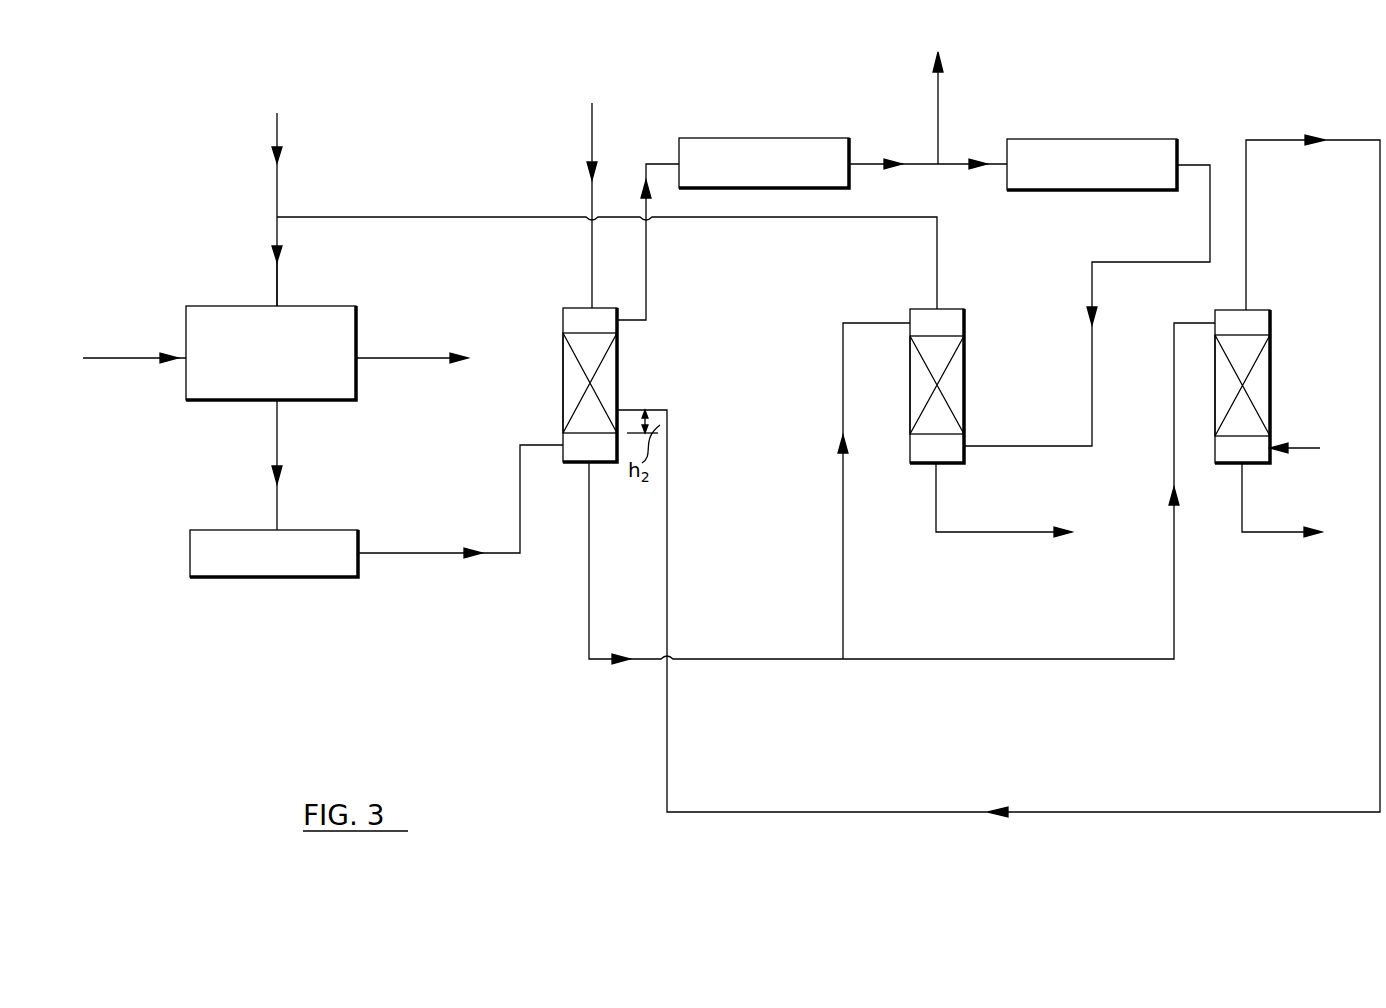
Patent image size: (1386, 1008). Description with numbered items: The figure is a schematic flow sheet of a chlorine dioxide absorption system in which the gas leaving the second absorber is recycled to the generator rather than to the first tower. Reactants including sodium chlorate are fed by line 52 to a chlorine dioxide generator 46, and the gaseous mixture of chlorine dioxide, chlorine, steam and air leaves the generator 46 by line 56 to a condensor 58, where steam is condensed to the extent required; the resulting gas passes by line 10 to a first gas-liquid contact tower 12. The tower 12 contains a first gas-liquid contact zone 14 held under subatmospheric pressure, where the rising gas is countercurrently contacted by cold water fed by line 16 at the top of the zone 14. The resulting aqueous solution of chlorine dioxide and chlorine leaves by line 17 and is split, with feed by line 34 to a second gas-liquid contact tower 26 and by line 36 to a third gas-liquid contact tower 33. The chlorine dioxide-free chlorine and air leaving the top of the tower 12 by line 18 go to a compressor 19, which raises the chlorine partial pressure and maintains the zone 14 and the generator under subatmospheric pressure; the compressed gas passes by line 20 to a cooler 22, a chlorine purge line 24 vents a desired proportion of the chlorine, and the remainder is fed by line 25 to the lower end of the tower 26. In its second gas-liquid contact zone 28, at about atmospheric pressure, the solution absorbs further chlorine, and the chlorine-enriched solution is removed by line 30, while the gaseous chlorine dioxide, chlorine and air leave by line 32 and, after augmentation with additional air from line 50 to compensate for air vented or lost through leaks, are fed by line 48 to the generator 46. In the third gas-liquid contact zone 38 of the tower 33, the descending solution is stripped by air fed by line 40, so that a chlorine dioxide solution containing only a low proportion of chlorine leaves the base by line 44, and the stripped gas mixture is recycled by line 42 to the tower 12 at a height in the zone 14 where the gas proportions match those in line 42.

The line 10 is at (448, 553).
The first gas-liquid contact tower 12 is at (562, 318).
The first gas-liquid contact zone 14 is at (618, 362).
The line 16 is at (593, 110).
The line 17 is at (589, 627).
The line 18 is at (646, 170).
The compressor 19 is at (785, 138).
The line 20 is at (920, 168).
The cooler 22 is at (1147, 138).
The chlorine purge line 24 is at (940, 102).
The line 25 is at (1168, 265).
The second gas-liquid contact tower 26 is at (965, 320).
The second gas-liquid contact zone 28 is at (965, 370).
The line 30 is at (936, 500).
The line 32 is at (878, 222).
The third gas-liquid contact tower 33 is at (1272, 317).
The line 34 is at (843, 367).
The line 36 is at (1050, 661).
The third gas-liquid contact zone 38 is at (1272, 370).
The line 40 is at (1303, 450).
The line 42 is at (1333, 138).
The line 44 is at (1275, 531).
The chlorine dioxide generator 46 is at (207, 403).
The line 48 is at (277, 281).
The line 50 is at (277, 185).
The line 52 is at (132, 358).
The line 56 is at (277, 502).
The condensor 58 is at (288, 580).